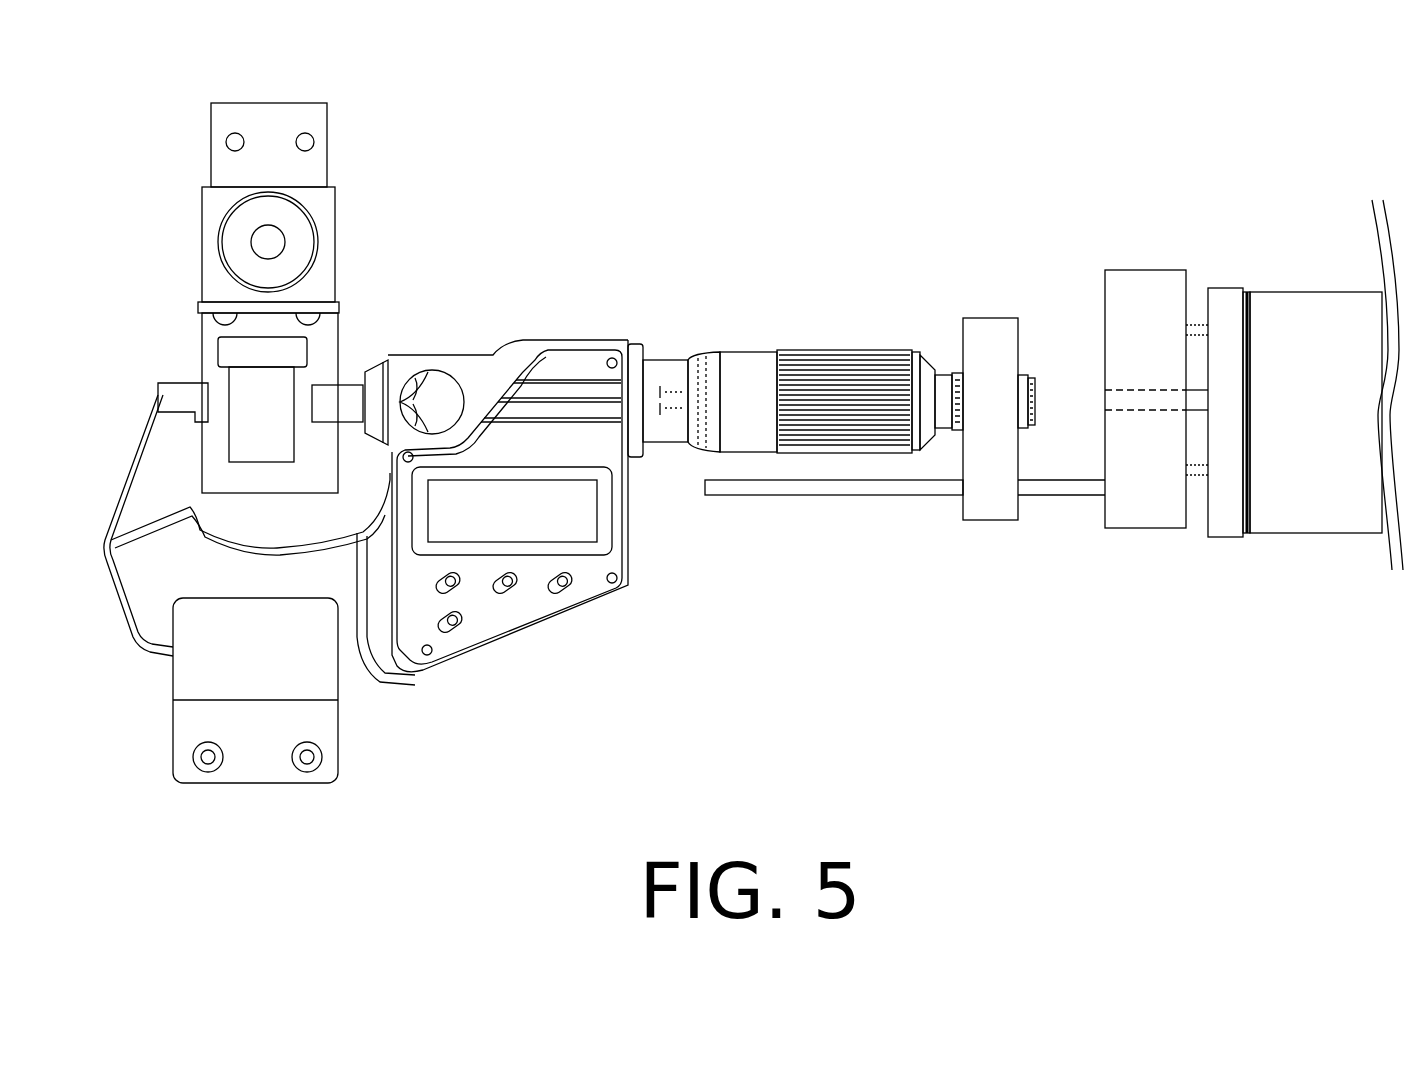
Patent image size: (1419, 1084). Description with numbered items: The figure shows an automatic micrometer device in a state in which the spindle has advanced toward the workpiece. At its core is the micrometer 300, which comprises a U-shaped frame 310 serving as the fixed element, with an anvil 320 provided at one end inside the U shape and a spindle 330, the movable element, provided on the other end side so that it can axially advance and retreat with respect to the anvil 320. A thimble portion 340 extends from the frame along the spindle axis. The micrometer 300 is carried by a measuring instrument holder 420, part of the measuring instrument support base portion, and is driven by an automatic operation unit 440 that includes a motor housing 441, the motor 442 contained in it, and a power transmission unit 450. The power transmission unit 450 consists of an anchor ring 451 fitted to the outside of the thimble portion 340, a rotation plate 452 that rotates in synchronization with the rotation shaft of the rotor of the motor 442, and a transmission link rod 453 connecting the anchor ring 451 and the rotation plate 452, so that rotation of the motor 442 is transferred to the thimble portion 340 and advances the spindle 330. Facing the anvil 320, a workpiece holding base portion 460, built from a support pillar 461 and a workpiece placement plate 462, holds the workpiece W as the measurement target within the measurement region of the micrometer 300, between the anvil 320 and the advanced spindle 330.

The micrometer 300 is at (624, 634).
The U-shaped frame 310 is at (352, 690).
The anvil 320 is at (197, 381).
The spindle 330 is at (357, 392).
The thimble portion 340 is at (743, 355).
The workpiece W is at (292, 383).
The measuring instrument holder 420 is at (178, 687).
The automatic operation unit 440 is at (1267, 528).
The motor housing 441 is at (1335, 528).
The motor 442 is at (1320, 323).
The power transmission unit 450 is at (1019, 262).
The anchor ring 451 is at (993, 521).
The rotation plate 452 is at (1152, 277).
The transmission link rod 453 is at (902, 488).
The workpiece holding base portion 460 is at (180, 136).
The support pillar 461 is at (328, 114).
The workpiece placement plate 462 is at (340, 330).